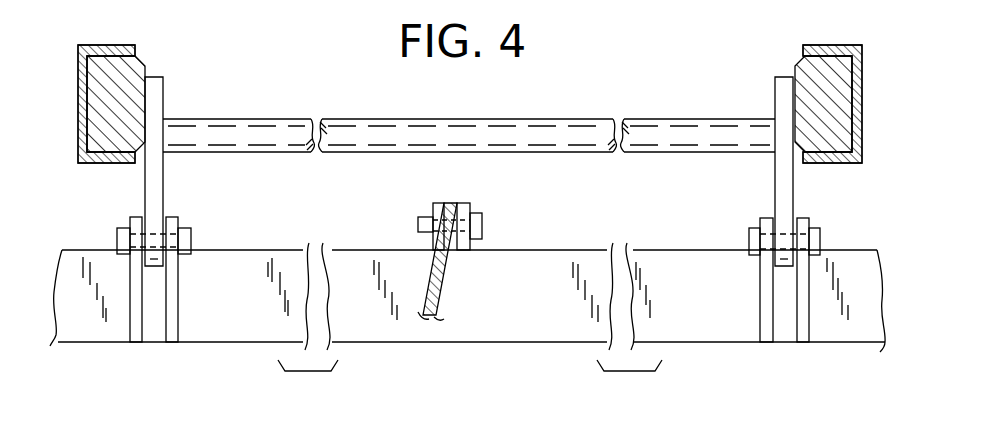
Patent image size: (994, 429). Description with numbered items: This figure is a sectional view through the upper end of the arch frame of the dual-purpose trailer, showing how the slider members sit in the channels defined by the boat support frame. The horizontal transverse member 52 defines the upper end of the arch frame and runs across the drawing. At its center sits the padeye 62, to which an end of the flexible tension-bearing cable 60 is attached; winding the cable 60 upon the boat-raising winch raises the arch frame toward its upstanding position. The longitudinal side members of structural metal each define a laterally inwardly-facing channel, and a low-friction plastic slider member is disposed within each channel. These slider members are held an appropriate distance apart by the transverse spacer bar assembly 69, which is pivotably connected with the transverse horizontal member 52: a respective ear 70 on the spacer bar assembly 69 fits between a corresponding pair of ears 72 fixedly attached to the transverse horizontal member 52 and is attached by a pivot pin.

The horizontal transverse member 52 is at (355, 268).
The flexible tension-bearing cable 60 is at (437, 287).
The padeye 62 is at (445, 202).
The transverse spacer bar assembly 69 is at (360, 120).
The ear 70 is at (153, 170).
The ears 72 is at (137, 289).